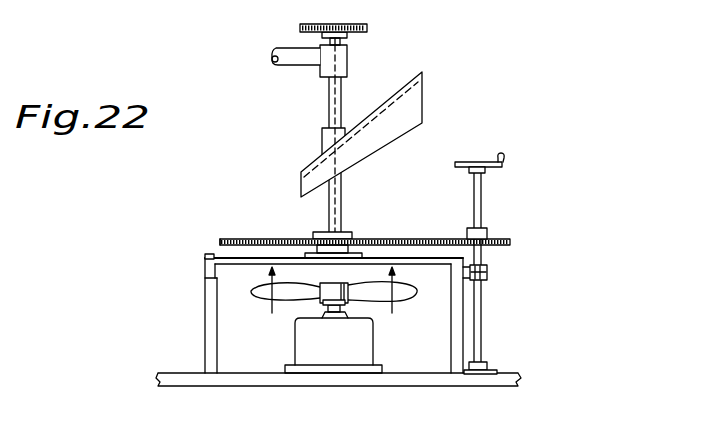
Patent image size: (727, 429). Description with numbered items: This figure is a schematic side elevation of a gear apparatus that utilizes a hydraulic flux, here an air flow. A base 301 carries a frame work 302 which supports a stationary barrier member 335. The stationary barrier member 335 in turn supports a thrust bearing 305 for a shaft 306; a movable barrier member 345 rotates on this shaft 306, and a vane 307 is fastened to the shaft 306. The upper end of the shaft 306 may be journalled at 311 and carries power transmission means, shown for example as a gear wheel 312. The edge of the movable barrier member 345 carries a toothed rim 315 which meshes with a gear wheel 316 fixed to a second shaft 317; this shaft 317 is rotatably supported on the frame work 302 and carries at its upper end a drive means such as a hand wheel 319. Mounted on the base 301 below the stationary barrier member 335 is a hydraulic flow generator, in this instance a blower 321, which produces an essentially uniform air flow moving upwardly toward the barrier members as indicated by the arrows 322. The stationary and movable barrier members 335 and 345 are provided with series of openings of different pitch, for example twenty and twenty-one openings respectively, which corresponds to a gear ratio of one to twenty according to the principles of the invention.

The base 301 is at (159, 373).
The frame work 302 is at (205, 302).
The thrust bearing 305 is at (360, 240).
The shaft 306 is at (338, 192).
The vane 307 is at (412, 108).
The journal 311 is at (347, 58).
The gear wheel 312 is at (367, 29).
The toothed rim 315 is at (413, 242).
The gear wheel 316 is at (510, 243).
The shaft 317 is at (481, 201).
The hand wheel 319 is at (490, 173).
The blower 321 is at (303, 332).
The arrows 322 is at (285, 283).
The stationary barrier member 335 is at (208, 256).
The movable barrier member 345 is at (224, 238).